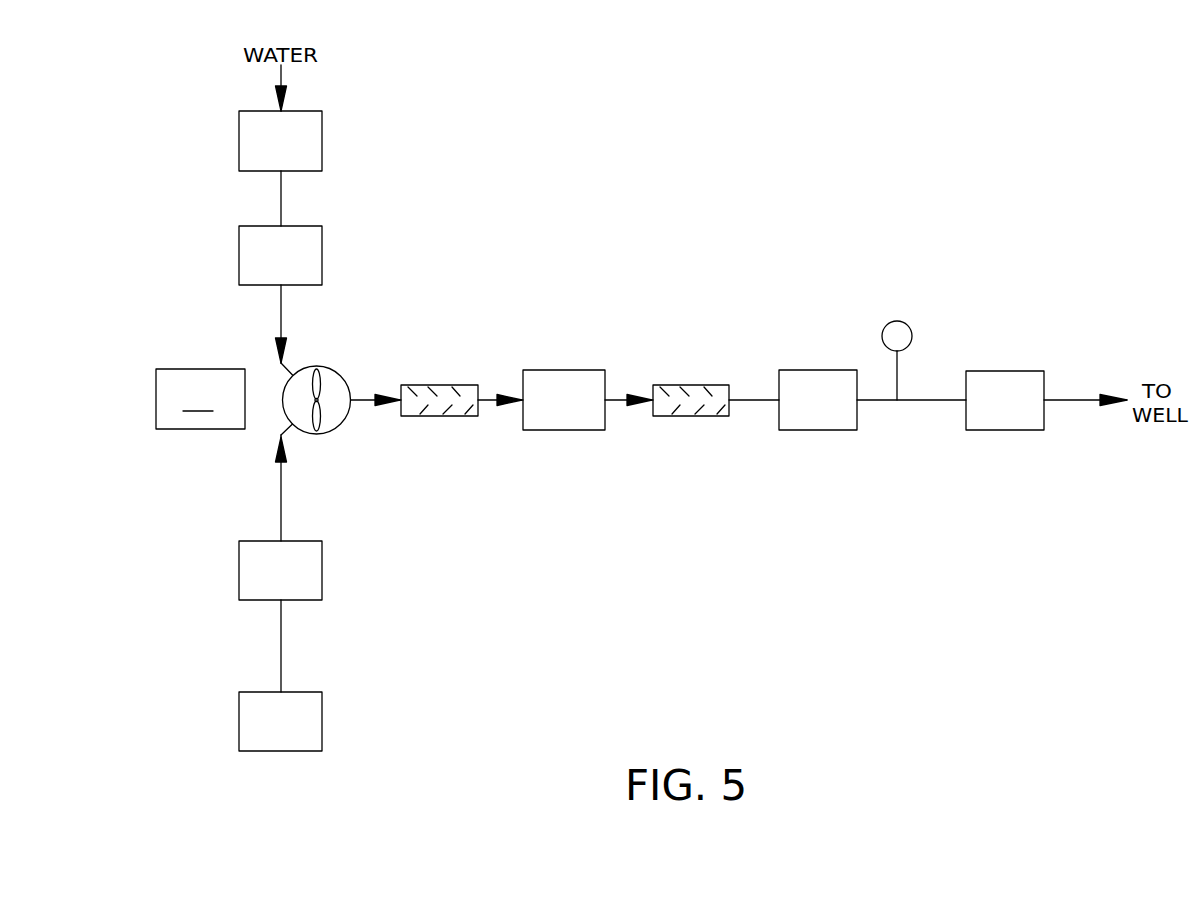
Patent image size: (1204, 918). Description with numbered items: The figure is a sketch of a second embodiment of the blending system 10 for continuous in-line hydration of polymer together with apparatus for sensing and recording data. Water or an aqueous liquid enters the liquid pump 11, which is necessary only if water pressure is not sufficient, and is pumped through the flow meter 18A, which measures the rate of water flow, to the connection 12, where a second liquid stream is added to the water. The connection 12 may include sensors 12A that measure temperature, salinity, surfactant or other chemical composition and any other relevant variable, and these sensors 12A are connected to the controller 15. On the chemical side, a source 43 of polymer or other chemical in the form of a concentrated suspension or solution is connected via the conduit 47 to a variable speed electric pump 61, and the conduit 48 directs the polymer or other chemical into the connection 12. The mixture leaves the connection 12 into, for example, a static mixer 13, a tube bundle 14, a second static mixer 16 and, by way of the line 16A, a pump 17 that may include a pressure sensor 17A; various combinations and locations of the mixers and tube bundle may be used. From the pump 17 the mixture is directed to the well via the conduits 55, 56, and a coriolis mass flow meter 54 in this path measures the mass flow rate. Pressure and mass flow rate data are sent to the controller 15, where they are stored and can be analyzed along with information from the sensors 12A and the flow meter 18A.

The blending system 10 is at (533, 240).
The liquid pump 11 is at (322, 138).
The flow meter 18A is at (322, 254).
The connection 12 is at (345, 376).
The sensors 12A is at (295, 397).
The controller 15 is at (200, 399).
The static mixer 13 is at (433, 417).
The tube bundle 14 is at (570, 370).
The static mixer 16 is at (690, 383).
The line 16A is at (757, 400).
The pump 17 is at (819, 370).
The pressure sensor 17A is at (897, 321).
The conduit 55 is at (928, 402).
The coriolis mass flow meter 54 is at (1004, 430).
The conduit 56 is at (1066, 402).
The conduit 48 is at (281, 518).
The variable speed electric pump 61 is at (322, 570).
The conduit 47 is at (281, 667).
The source 43 is at (322, 720).